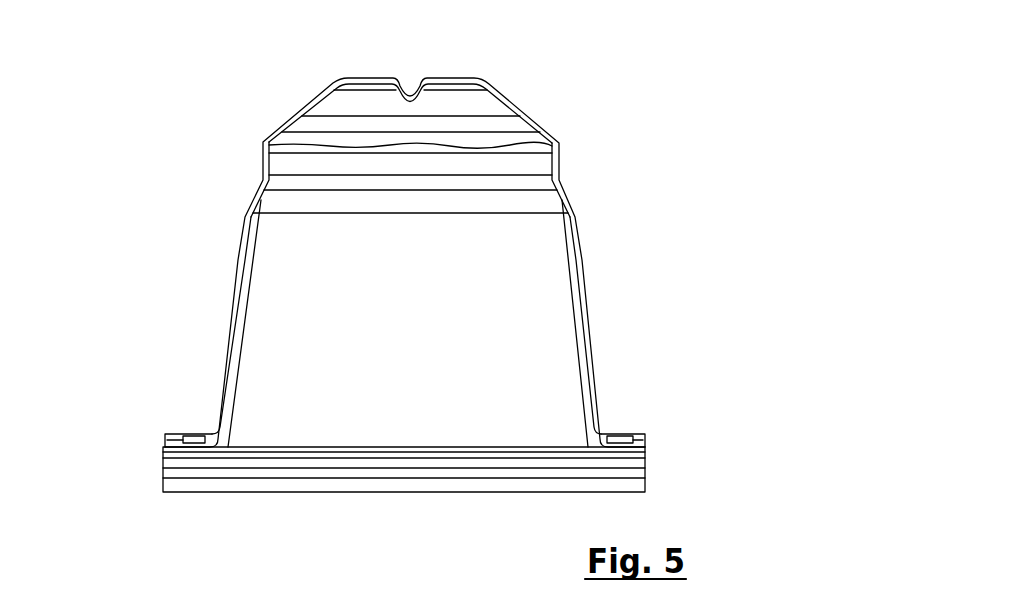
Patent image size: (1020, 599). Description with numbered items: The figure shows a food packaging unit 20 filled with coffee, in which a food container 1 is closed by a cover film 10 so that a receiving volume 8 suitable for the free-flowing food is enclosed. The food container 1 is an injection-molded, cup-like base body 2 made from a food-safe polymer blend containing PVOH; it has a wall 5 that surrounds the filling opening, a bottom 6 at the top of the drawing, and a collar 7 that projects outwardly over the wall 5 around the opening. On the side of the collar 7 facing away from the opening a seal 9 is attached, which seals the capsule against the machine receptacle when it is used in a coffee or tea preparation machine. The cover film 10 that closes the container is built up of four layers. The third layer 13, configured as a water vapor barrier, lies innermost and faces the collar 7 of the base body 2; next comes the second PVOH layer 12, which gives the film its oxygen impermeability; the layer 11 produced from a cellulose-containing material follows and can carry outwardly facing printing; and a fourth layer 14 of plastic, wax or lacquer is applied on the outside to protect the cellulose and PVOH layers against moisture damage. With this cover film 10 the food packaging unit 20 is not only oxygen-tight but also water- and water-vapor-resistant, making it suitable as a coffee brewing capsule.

The food container 1 is at (148, 178).
The base body 2 is at (549, 179).
The wall 5 is at (238, 293).
The bottom 6 is at (283, 125).
The collar 7 is at (647, 438).
The receiving volume 8 is at (511, 323).
The seal 9 is at (190, 438).
The food container cover film 10 is at (533, 459).
The layer produced from a cellulose-containing material 11 is at (633, 478).
The second PVOH layer 12 is at (633, 468).
The third layer 13 is at (635, 460).
The fourth layer 14 is at (635, 490).
The food packaging unit 20 is at (526, 71).